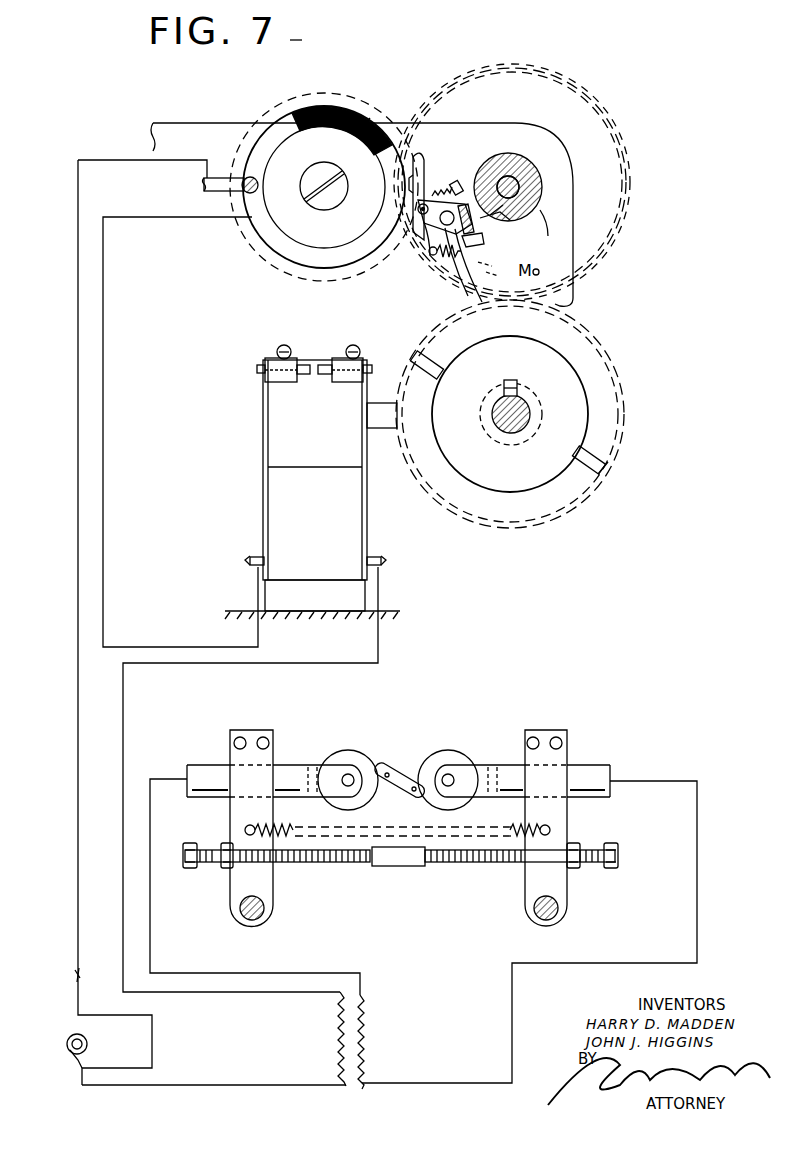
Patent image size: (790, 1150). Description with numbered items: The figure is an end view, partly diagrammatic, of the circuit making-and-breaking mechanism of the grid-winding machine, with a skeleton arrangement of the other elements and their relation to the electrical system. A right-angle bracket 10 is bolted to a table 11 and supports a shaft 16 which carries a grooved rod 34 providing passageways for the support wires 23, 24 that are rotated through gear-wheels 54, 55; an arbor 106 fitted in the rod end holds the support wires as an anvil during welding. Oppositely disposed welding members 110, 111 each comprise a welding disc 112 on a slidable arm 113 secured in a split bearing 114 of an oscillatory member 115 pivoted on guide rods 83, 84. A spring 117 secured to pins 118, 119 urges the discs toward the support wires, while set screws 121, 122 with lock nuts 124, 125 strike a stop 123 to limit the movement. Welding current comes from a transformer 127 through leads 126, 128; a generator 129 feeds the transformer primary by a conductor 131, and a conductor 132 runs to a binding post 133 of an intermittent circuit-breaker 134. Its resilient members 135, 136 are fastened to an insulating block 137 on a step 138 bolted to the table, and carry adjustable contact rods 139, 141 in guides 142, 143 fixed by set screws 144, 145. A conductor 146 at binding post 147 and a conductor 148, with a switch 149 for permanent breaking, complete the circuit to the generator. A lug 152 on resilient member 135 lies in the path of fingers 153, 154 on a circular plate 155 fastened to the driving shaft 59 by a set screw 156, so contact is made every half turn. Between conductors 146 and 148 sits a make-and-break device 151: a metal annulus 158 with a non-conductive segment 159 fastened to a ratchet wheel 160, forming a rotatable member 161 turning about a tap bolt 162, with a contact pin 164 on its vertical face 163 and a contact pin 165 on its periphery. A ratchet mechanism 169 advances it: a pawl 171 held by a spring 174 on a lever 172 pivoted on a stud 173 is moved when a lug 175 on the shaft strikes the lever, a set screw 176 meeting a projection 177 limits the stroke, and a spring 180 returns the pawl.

The right-angle bracket 10 is at (566, 276).
The table 11 is at (308, 623).
The shaft 16 is at (527, 199).
The support wire 23 is at (508, 180).
The support wire 24 is at (548, 222).
The rod 34 is at (506, 192).
The gear-wheel 54 is at (624, 196).
The gear-wheel 55 is at (590, 494).
The driving shaft 59 is at (520, 424).
The guide rod 83 is at (266, 910).
The guide rod 84 is at (560, 910).
The arbor 106 is at (398, 776).
The welding member 110 is at (536, 728).
The welding member 111 is at (230, 732).
The welding disc 112 is at (354, 756).
The slidable arm 113 is at (192, 770).
The split bearing 114 is at (272, 735).
The oscillatory member 115 is at (244, 832).
The spring 117 is at (520, 834).
The pin 118 is at (560, 824).
The pin 119 is at (242, 834).
The set screw 121 is at (586, 864).
The set screw 122 is at (207, 868).
The stop 123 is at (406, 866).
The lock nut 124 is at (578, 866).
The lock nut 125 is at (228, 870).
The lead 126 is at (549, 932).
The transformer 127 is at (394, 1032).
The lead 128 is at (150, 948).
The generator 129 is at (87, 1045).
The conductor 131 is at (214, 1074).
The conductor 132 is at (380, 652).
The binding post 133 is at (386, 566).
The intermittent circuit-breaker 134 is at (315, 470).
The resilient member 135 is at (366, 466).
The resilient member 136 is at (266, 466).
The block 137 is at (317, 540).
The step 138 is at (366, 604).
The contact rod 139 is at (324, 364).
The contact rod 141 is at (306, 364).
The guide 142 is at (345, 384).
The guide 143 is at (289, 384).
The set screw 144 is at (360, 352).
The set screw 145 is at (276, 351).
The conductor 146 is at (180, 432).
The binding post 147 is at (252, 570).
The conductor 148 is at (112, 622).
The switch 149 is at (72, 975).
The make-and-break device 151 is at (324, 181).
The lug 152 is at (396, 420).
The finger 153 is at (432, 365).
The finger 154 is at (604, 460).
The circular plate 155 is at (588, 400).
The set screw 156 is at (512, 380).
The metal annulus 158 is at (360, 262).
The segment 159 is at (366, 122).
The ratchet wheel 160 is at (415, 152).
The rotatable member 161 is at (342, 111).
The tap bolt 162 is at (336, 204).
The vertical face 163 is at (268, 226).
The contact pin 164 is at (246, 192).
The contact pin 165 is at (216, 178).
The ratchet mechanism 169 is at (446, 192).
The pawl 171 is at (440, 170).
The lever 172 is at (452, 262).
The stud 173 is at (466, 258).
The spring 174 is at (490, 262).
The lug 175 is at (500, 216).
The set screw 176 is at (476, 240).
The projection 177 is at (479, 302).
The spring 180 is at (465, 184).